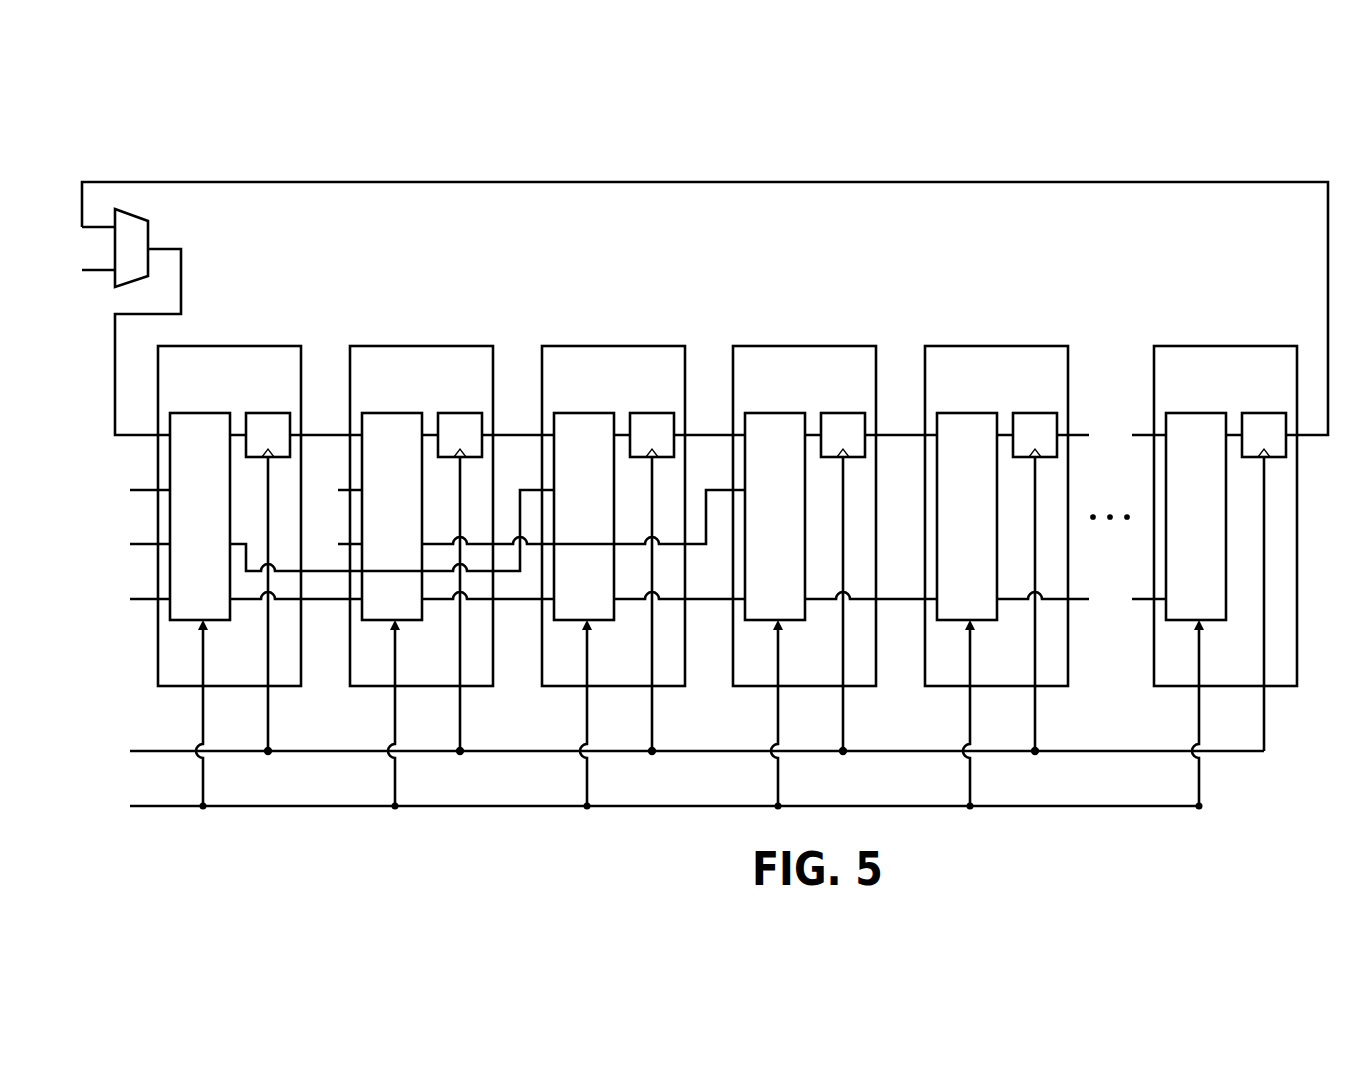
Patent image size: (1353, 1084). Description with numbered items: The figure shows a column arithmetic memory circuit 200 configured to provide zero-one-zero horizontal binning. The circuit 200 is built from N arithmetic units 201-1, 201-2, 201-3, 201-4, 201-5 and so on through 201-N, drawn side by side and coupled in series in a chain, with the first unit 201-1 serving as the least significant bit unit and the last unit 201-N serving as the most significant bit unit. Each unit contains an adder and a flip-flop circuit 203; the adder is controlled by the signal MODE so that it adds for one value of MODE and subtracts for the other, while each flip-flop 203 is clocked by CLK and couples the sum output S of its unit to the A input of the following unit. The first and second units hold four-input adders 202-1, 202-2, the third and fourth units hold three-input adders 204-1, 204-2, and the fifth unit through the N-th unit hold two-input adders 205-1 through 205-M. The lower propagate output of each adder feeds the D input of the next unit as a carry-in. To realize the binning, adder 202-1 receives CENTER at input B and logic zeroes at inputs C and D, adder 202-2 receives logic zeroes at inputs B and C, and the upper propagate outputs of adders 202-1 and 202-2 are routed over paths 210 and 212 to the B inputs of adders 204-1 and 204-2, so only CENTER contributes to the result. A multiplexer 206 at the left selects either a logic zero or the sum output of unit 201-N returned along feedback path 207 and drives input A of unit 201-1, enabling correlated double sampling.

The column arithmetic memory circuit 200 is at (1198, 155).
The feedback path 207 is at (352, 182).
The multiplexer 206 is at (138, 218).
The first arithmetic unit 201-1 is at (235, 345).
The second arithmetic unit 201-2 is at (427, 345).
The third arithmetic unit 201-3 is at (619, 345).
The fourth arithmetic unit 201-4 is at (810, 345).
The fifth arithmetic unit 201-5 is at (1002, 345).
The N-th arithmetic unit 201-N is at (1228, 345).
The first four-input adder 202-1 is at (203, 412).
The second four-input adder 202-2 is at (395, 412).
The first three-input adder 204-1 is at (587, 412).
The second three-input adder 204-2 is at (778, 412).
The two-input adder 205-1 is at (970, 412).
The two-input adder 205-M is at (1199, 412).
The flip-flop circuit 203 is at (268, 420).
The path 210 is at (333, 575).
The path 212 is at (712, 535).